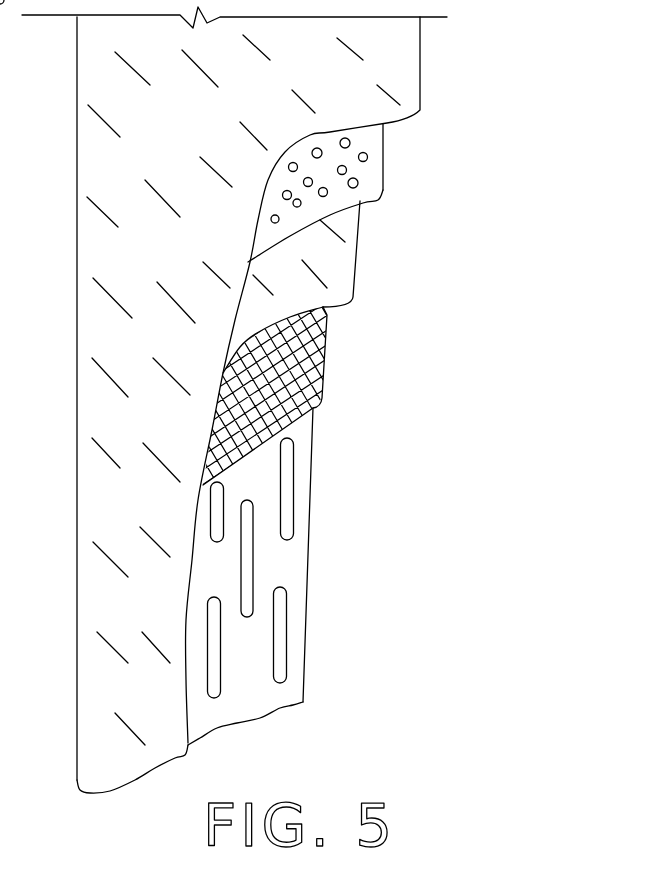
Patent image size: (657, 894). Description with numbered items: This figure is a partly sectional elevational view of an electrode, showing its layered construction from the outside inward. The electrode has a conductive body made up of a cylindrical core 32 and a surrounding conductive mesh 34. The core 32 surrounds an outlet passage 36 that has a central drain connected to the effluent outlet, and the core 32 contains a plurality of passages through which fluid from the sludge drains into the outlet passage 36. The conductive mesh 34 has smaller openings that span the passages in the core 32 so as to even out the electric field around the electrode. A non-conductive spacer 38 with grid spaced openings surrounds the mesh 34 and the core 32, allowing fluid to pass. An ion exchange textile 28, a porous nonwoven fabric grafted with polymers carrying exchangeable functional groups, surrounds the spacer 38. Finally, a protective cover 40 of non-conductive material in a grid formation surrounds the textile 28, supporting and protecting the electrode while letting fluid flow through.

The protective cover 40 is at (420, 80).
The ion exchange textile 28 is at (383, 167).
The non-conductive spacer 38 is at (357, 262).
The conductive mesh 34 is at (327, 357).
The outlet passage 36 is at (293, 483).
The cylindrical core 32 is at (307, 590).